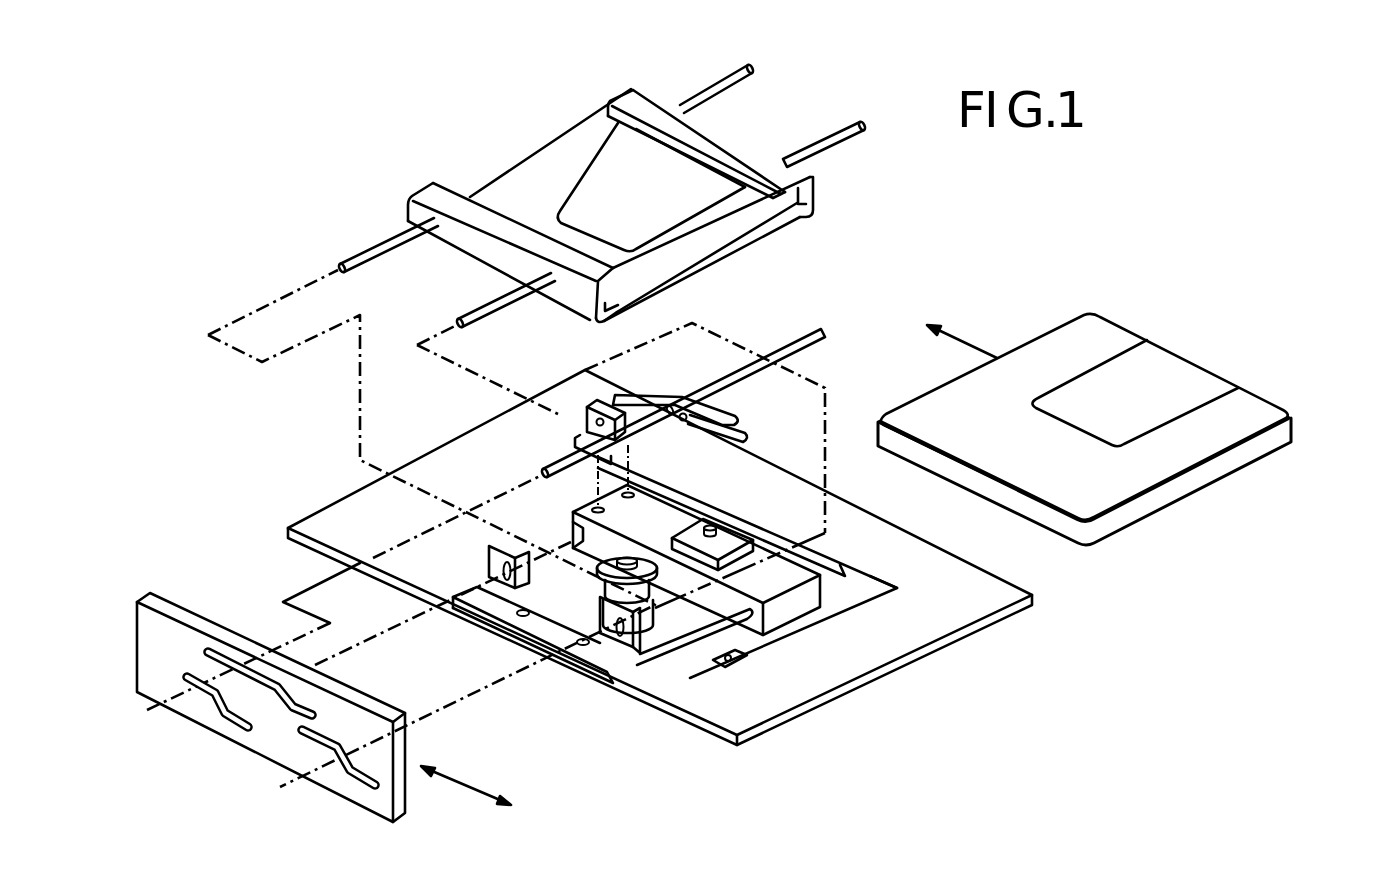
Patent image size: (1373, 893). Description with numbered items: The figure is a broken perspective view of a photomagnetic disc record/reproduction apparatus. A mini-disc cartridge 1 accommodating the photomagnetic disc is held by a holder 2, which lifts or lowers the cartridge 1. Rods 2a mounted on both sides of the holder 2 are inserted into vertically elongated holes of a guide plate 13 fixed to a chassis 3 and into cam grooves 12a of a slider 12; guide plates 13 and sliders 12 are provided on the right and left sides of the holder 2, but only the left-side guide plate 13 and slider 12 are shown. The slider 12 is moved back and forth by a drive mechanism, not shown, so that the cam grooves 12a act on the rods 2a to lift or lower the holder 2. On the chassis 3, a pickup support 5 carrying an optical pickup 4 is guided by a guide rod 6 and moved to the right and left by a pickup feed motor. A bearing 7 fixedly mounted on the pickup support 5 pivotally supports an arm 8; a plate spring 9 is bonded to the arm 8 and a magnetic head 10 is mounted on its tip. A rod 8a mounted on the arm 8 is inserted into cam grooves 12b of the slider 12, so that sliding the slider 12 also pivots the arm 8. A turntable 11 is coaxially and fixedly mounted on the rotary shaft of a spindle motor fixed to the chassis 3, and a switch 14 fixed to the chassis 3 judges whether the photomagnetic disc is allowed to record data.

The mini-disc cartridge 1 is at (1257, 407).
The holder 2 is at (530, 165).
The rods 2a is at (722, 73).
The chassis 3 is at (858, 655).
The optical pickup 4 is at (747, 513).
The pickup support 5 is at (803, 603).
The guide rod 6 is at (808, 658).
The bearing 7 is at (587, 418).
The arm 8 is at (687, 423).
The rod 8a is at (556, 462).
The plate spring 9 is at (630, 392).
The magnetic head 10 is at (738, 435).
The turntable 11 is at (656, 567).
The slider 12 is at (267, 748).
The cam grooves 12a is at (337, 727).
The cam grooves 12b is at (208, 652).
The guide plate 13 is at (617, 650).
The switch 14 is at (727, 627).